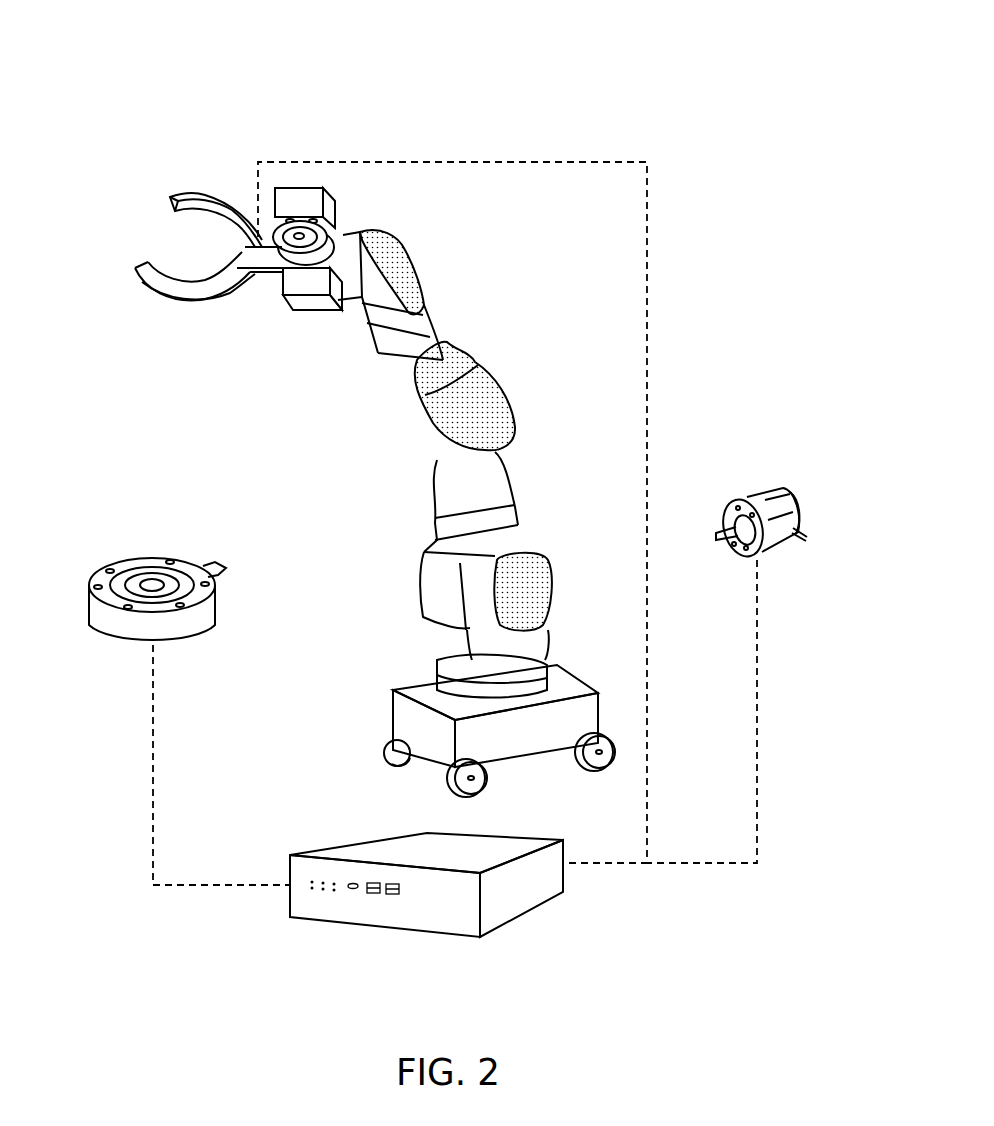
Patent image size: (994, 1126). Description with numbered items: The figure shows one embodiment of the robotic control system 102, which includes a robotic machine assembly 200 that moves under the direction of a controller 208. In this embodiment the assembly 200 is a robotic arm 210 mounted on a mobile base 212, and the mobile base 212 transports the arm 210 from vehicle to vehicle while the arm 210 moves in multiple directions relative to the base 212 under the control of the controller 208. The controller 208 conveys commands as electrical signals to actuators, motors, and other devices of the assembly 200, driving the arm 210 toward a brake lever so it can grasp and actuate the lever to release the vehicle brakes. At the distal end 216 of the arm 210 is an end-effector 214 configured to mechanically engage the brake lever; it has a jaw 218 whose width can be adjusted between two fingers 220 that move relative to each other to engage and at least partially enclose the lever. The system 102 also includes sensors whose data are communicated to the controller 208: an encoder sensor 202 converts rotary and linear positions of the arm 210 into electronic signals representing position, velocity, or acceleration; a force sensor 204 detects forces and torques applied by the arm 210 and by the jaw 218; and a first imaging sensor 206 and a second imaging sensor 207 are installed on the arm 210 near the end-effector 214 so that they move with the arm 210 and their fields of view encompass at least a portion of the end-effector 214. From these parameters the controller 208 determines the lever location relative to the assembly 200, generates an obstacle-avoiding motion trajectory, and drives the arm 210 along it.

The robotic control system 102 is at (596, 58).
The robotic machine assembly 200 is at (374, 460).
The encoder sensor 202 is at (758, 487).
The force sensor 204 is at (150, 556).
The first imaging sensor 206 is at (312, 190).
The second imaging sensor 207 is at (296, 300).
The controller 208 is at (525, 918).
The robotic arm 210 is at (400, 277).
The mobile base 212 is at (403, 716).
The end-effector 214 is at (205, 196).
The distal end 216 is at (112, 239).
The jaw 218 is at (185, 196).
The fingers 220 is at (165, 212).